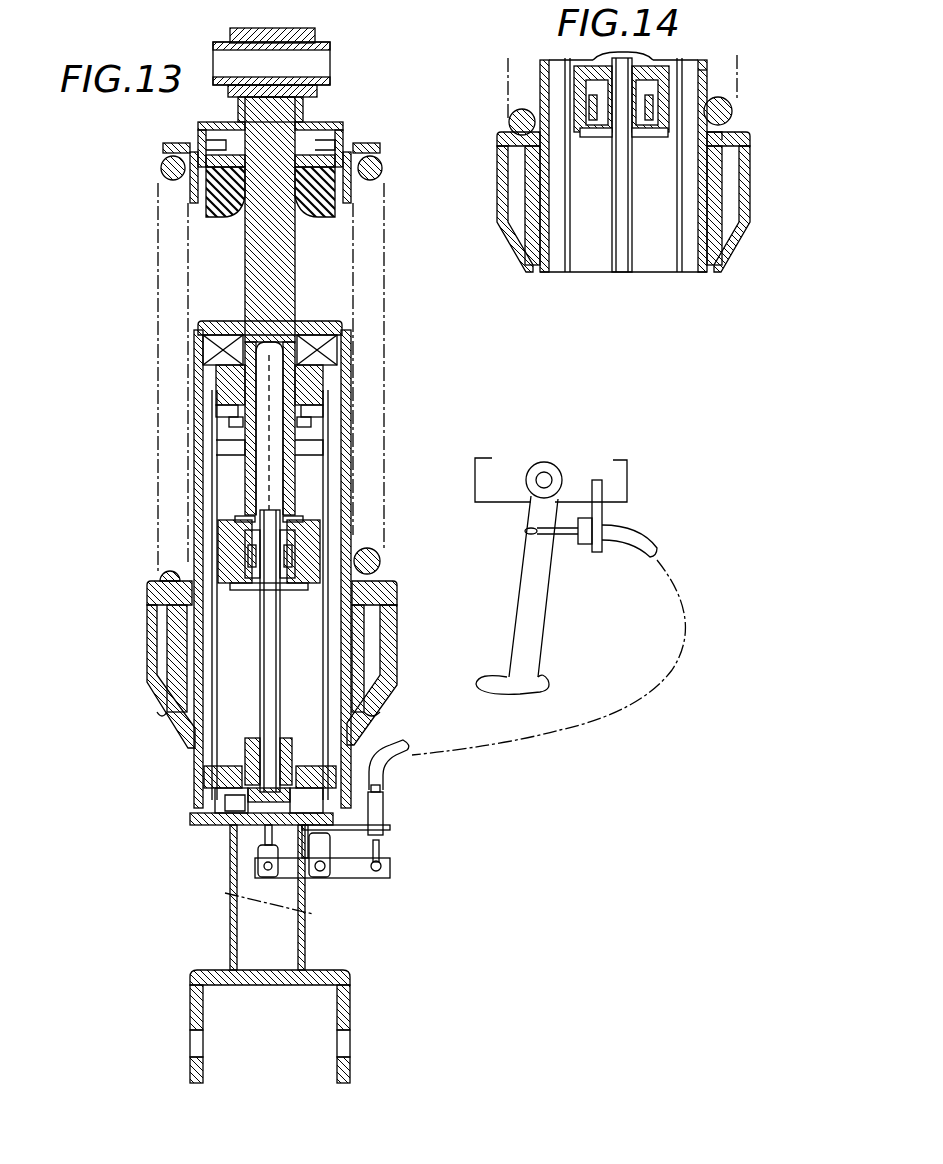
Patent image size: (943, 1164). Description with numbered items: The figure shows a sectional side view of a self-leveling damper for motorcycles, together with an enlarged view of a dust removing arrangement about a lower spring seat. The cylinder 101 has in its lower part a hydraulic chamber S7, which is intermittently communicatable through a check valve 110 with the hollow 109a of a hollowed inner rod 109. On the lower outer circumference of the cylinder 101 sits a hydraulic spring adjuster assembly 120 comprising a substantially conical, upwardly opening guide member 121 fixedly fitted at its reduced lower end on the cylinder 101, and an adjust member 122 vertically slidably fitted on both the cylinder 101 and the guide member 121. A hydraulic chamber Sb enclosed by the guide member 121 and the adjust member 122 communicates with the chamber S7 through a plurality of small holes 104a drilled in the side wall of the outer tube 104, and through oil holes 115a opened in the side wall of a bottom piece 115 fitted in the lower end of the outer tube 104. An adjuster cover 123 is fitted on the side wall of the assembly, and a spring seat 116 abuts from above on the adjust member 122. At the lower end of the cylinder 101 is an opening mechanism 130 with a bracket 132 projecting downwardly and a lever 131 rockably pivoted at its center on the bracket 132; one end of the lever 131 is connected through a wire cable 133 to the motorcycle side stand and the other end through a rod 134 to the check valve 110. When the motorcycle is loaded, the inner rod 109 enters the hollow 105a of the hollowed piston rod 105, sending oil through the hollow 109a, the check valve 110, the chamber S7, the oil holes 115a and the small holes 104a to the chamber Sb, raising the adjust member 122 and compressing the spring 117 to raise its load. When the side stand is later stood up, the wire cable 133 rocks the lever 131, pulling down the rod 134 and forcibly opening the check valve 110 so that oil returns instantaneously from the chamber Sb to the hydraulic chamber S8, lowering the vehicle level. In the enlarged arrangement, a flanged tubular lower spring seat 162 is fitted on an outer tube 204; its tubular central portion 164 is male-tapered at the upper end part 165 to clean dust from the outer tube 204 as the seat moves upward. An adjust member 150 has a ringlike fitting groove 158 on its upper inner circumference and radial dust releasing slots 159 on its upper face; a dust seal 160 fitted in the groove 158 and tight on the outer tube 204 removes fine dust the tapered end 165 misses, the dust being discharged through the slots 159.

In FIG. 13, the cylinder 101 is at (354, 413).
In FIG. 13, the outer tube 104 is at (190, 490).
In FIG. 13, the small holes 104a is at (356, 768).
In FIG. 13, the piston rod 105 is at (278, 297).
In FIG. 13, the hollow of piston rod 105a is at (282, 388).
In FIG. 13, the inner rod 109 is at (247, 683).
In FIG. 13, the hollow of inner rod 109a is at (270, 682).
In FIG. 14, the hollow of inner rod 109a is at (628, 214).
In FIG. 13, the check valve 110 is at (297, 845).
In FIG. 13, the bottom piece 115 is at (235, 780).
In FIG. 13, the oil holes 115a is at (328, 800).
In FIG. 13, the spring seat 116 is at (163, 572).
In FIG. 13, the spring 117 is at (381, 564).
In FIG. 13, the spring adjuster assembly 120 is at (418, 663).
In FIG. 13, the guide member 121 is at (388, 628).
In FIG. 13, the adjust member 122 is at (392, 599).
In FIG. 13, the adjuster cover 123 is at (175, 722).
In FIG. 13, the opening mechanism 130 is at (397, 868).
In FIG. 13, the lever 131 is at (288, 860).
In FIG. 13, the bracket 132 is at (330, 850).
In FIG. 13, the wire cable 133 is at (381, 849).
In FIG. 13, the rod 134 is at (250, 898).
In FIG. 13, the adjust member 150 is at (523, 641).
In FIG. 14, the adjust member 150 is at (748, 128).
In FIG. 14, the fitting groove 158 is at (545, 143).
In FIG. 14, the dust releasing slots 159 is at (507, 142).
In FIG. 14, the dust seal 160 is at (743, 142).
In FIG. 14, the lower spring seat 162 is at (739, 121).
In FIG. 14, the tubular central portion 164 is at (540, 82).
In FIG. 14, the upper end part 165 is at (706, 69).
In FIG. 14, the outer tube 204 is at (700, 62).
In FIG. 13, the hydraulic chamber S7 is at (236, 805).
In FIG. 13, the hydraulic chamber S8 is at (233, 658).
In FIG. 13, the hydraulic chamber Sb is at (370, 668).